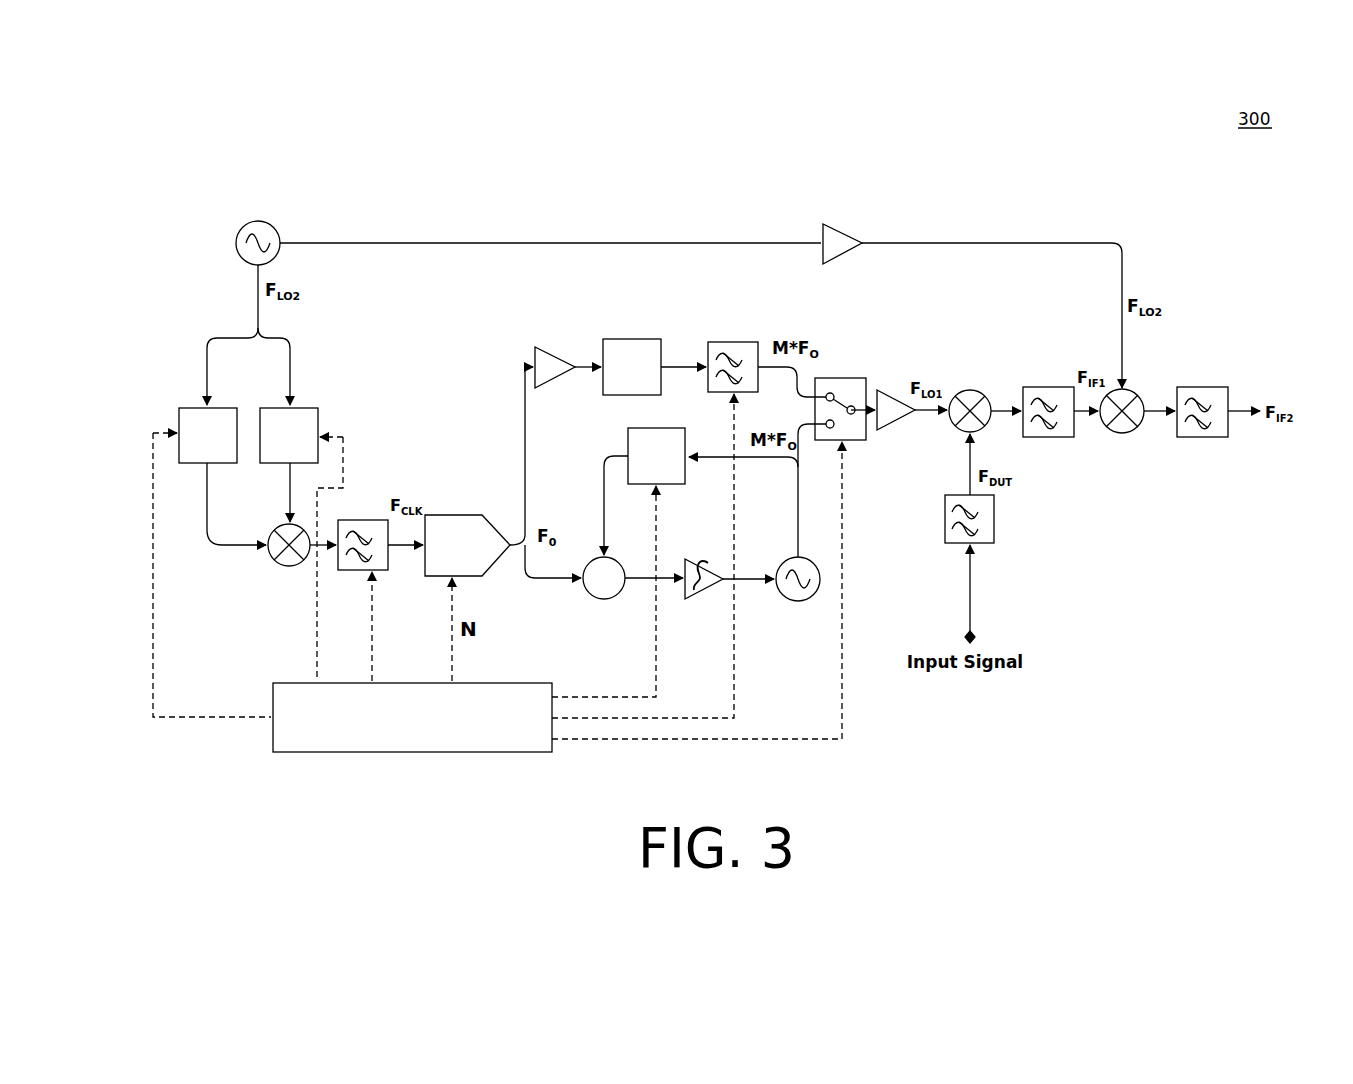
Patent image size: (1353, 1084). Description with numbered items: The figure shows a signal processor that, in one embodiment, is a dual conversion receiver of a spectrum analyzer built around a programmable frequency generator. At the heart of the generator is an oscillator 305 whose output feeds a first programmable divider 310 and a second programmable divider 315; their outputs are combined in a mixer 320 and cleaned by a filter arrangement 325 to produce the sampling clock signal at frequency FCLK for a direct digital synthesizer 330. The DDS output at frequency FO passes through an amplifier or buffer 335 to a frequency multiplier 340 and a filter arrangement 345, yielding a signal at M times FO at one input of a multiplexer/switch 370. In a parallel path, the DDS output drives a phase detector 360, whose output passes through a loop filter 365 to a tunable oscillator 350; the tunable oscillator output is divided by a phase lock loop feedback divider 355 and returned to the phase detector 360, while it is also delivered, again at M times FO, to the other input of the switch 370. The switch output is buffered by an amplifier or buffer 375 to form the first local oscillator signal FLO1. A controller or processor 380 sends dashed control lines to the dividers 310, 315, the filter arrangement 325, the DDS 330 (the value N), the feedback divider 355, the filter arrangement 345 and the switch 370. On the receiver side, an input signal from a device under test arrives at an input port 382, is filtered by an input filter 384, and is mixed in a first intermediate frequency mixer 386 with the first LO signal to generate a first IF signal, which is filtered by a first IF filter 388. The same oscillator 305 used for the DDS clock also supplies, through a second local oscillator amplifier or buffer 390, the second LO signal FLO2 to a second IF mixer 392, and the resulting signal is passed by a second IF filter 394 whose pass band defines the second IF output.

The oscillator 305 is at (262, 221).
The first programmable divider 310 is at (171, 400).
The second programmable divider 315 is at (324, 402).
The mixer 320 is at (289, 566).
The filter arrangement 325 is at (366, 518).
The direct digital synthesizer 330 is at (455, 513).
The amplifier or buffer 335 is at (552, 346).
The frequency multiplier 340 is at (632, 338).
The filter arrangement 345 is at (733, 341).
The tunable oscillator 350 is at (800, 601).
The phase lock loop feedback divider 355 is at (628, 434).
The phase detector 360 is at (607, 599).
The loop filter 365 is at (700, 600).
The multiplexer/switch 370 is at (840, 378).
The amplifier or buffer 375 is at (893, 391).
The controller or processor 380 is at (273, 683).
The input port 382 is at (983, 635).
The input filter 384 is at (995, 520).
The first intermediate frequency mixer 386 is at (972, 389).
The first IF filter 388 is at (1047, 386).
The second local oscillator amplifier or buffer 390 is at (842, 227).
The second IF mixer 392 is at (1120, 433).
The second IF filter 394 is at (1204, 386).